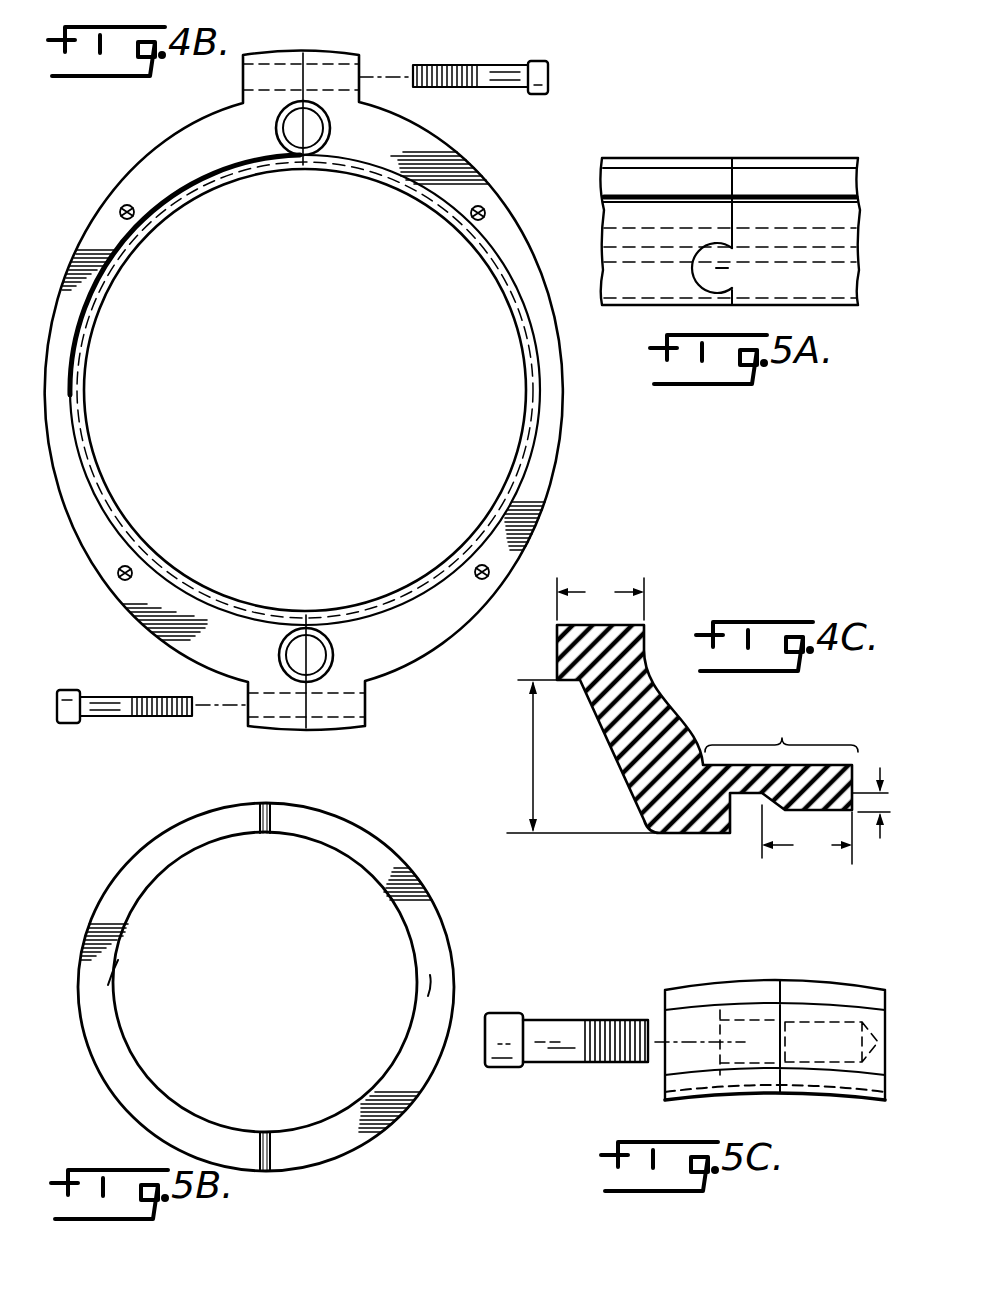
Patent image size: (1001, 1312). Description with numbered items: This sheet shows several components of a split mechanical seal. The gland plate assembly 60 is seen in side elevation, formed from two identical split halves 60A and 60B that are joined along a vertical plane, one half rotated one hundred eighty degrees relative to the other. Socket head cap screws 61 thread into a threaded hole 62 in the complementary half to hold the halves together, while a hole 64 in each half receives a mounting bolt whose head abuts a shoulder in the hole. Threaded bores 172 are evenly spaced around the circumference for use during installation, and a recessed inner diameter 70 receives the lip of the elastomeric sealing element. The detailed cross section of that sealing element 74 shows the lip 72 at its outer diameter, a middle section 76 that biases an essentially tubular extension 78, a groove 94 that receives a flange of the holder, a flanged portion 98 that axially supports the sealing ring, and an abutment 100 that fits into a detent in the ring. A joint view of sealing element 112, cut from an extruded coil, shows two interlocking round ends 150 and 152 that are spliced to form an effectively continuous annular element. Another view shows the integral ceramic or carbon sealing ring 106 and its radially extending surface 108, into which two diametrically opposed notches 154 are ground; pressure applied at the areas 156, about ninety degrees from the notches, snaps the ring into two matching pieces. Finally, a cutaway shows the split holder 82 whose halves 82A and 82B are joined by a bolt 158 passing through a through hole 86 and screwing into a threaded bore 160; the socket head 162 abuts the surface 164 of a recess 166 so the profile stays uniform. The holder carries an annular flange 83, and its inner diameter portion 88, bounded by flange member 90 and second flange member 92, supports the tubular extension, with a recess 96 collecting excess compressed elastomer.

In FIG. 4B, the gland plate assembly 60 is at (502, 150).
In FIG. 4B, the split half 60A is at (547, 492).
In FIG. 4B, the split half 60B is at (142, 626).
In FIG. 4B, the socket head cap screw 61 is at (132, 713).
In FIG. 4B, the threaded hole 62 is at (383, 740).
In FIG. 4B, the hole 64 is at (330, 667).
In FIG. 4B, the recessed inner diameter 70 is at (517, 456).
In FIG. 4B, the threaded bores 172 is at (455, 548).
In FIG. 5A, the sealing element 112 is at (783, 156).
In FIG. 5A, the interlocking round end 150 is at (693, 275).
In FIG. 5A, the interlocking round end 152 is at (718, 268).
In FIG. 4C, the lip 72 is at (557, 652).
In FIG. 4C, the sealing element 74 is at (606, 762).
In FIG. 4C, the middle section 76 is at (662, 722).
In FIG. 4C, the tubular extension 78 is at (752, 773).
In FIG. 4C, the groove 94 is at (651, 792).
In FIG. 4C, the flanged portion 98 is at (720, 836).
In FIG. 4C, the abutment 100 is at (793, 806).
In FIG. 5B, the sealing ring 106 is at (387, 1123).
In FIG. 5B, the radially extending surface 108 is at (410, 1046).
In FIG. 5B, the notches 154 is at (268, 1130).
In FIG. 5B, the pressure areas 156 is at (430, 981).
In FIG. 5C, the holder 82 is at (783, 972).
In FIG. 5C, the holder half 82A is at (683, 990).
In FIG. 5C, the holder half 82B is at (866, 992).
In FIG. 5C, the annular flange 83 is at (812, 1015).
In FIG. 5C, the through hole 86 is at (750, 1010).
In FIG. 5C, the inner diameter portion 88 is at (706, 1100).
In FIG. 5C, the flange member 90 is at (820, 1096).
In FIG. 5C, the second flange member 92 is at (862, 1106).
In FIG. 5C, the recess 96 is at (668, 1112).
In FIG. 5C, the threaded bore 160 is at (863, 990).
In FIG. 5C, the socket head 162 is at (509, 1013).
In FIG. 5C, the bolt 158 is at (598, 1025).
In FIG. 5C, the surface 164 is at (712, 1010).
In FIG. 5C, the recess 166 is at (680, 1032).